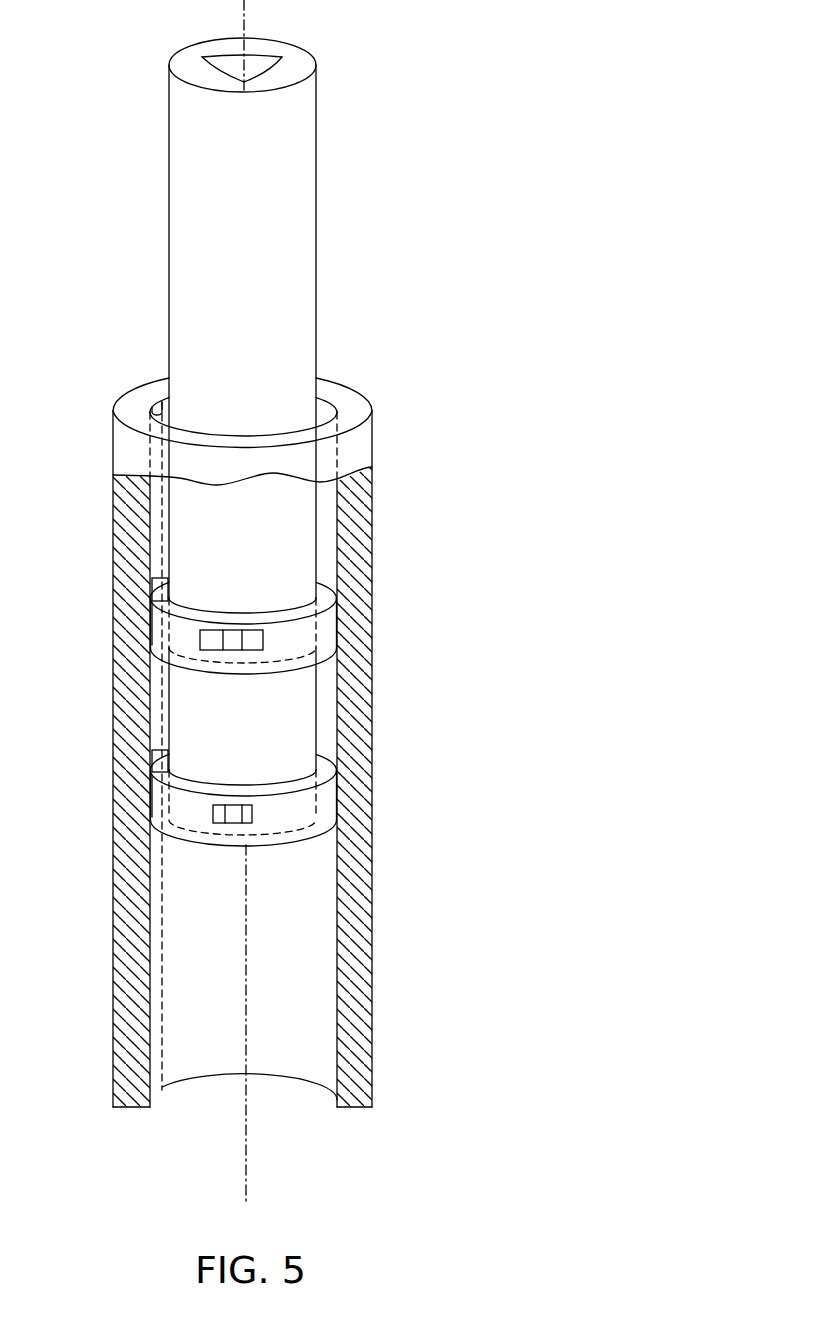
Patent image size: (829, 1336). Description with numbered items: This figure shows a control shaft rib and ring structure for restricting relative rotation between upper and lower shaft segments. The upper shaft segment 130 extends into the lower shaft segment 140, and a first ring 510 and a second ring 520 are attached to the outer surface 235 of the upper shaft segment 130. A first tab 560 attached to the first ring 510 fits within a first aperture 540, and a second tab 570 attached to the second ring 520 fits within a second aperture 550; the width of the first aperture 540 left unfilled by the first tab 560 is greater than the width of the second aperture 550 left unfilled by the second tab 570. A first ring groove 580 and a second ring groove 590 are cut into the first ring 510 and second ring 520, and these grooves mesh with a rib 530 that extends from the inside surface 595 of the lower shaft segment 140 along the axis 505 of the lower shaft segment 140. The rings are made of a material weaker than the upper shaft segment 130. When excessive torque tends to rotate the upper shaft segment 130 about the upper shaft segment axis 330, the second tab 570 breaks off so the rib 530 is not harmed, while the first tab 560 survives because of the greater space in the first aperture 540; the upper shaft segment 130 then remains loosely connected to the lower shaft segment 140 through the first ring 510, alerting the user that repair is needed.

The upper shaft segment 130 is at (316, 166).
The lower shaft segment 140 is at (373, 1025).
The outer surface 235 is at (302, 516).
The upper shaft segment axis 330 is at (245, 16).
The axis 505 is at (247, 1163).
The first ring 510 is at (328, 657).
The second ring 520 is at (320, 835).
The rib 530 is at (157, 405).
The first aperture 540 is at (263, 640).
The second aperture 550 is at (252, 815).
The first tab 560 is at (200, 640).
The second tab 570 is at (155, 815).
The first ring groove 580 is at (152, 583).
The second ring groove 590 is at (150, 770).
The inside surface 595 is at (338, 400).